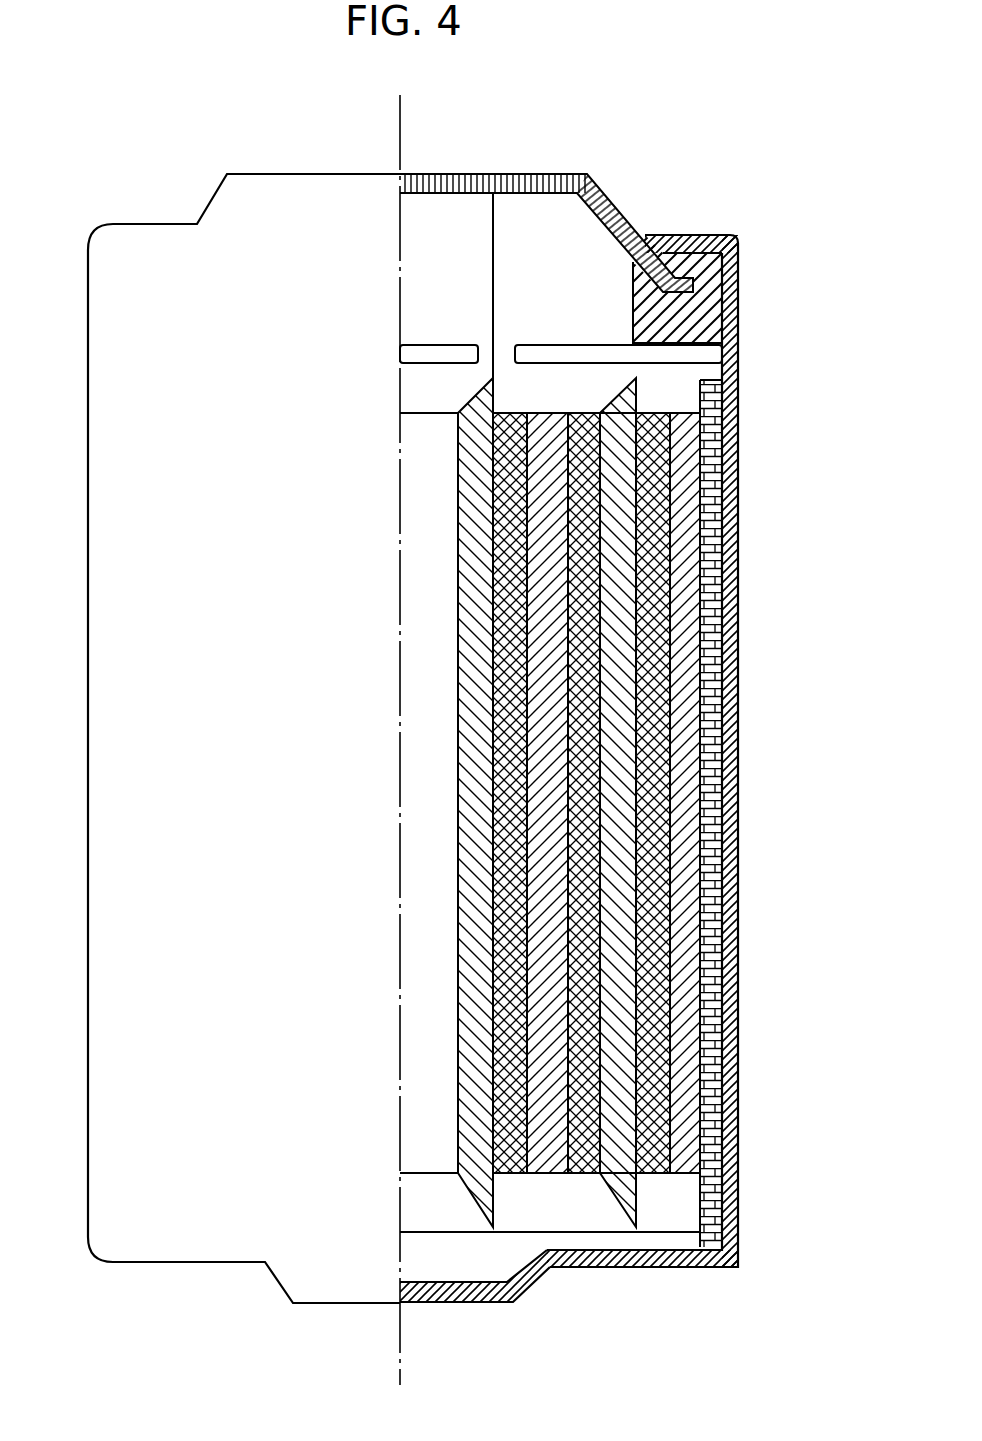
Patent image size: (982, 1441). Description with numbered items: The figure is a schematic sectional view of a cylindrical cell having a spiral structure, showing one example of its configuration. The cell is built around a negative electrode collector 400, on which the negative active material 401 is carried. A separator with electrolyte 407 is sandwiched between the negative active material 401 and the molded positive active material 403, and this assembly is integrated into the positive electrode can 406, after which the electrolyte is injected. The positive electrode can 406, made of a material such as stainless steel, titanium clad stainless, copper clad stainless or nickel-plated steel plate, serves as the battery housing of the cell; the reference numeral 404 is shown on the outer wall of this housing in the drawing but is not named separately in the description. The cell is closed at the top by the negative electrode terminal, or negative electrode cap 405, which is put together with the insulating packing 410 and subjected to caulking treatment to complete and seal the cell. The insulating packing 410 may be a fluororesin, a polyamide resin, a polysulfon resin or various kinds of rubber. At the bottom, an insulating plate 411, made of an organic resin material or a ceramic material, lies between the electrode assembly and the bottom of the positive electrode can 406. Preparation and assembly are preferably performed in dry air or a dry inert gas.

The negative electrode collector 400 is at (496, 262).
The negative active material 401 is at (627, 565).
The positive active material 403 is at (685, 1023).
The battery case 404 is at (742, 877).
The negative electrode terminal (negative electrode cap) 405 is at (530, 175).
The positive electrode can 406 is at (537, 1273).
The separator with electrolyte 407 is at (652, 737).
The insulating packing material 410 is at (747, 300).
The insulating plate 411 is at (650, 1243).